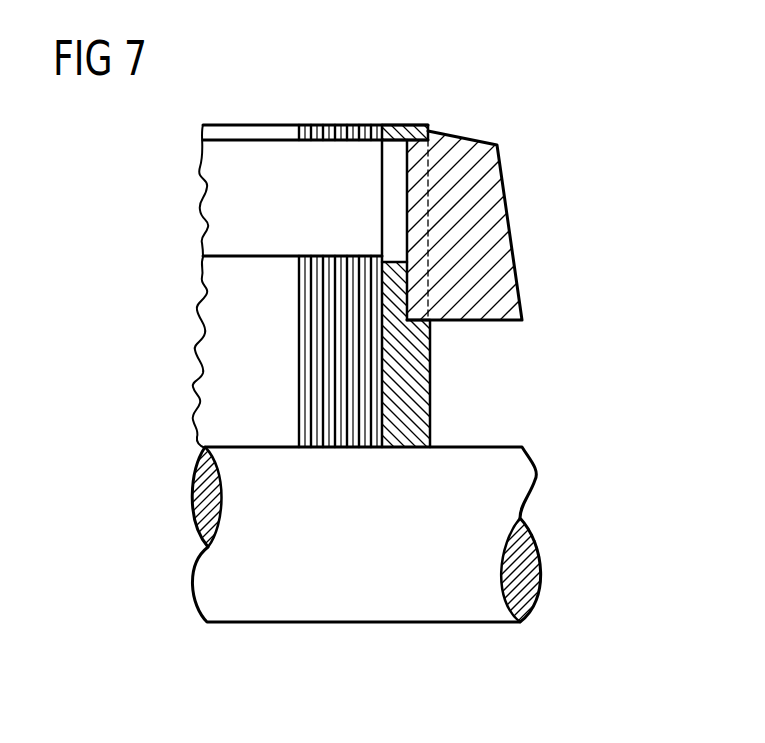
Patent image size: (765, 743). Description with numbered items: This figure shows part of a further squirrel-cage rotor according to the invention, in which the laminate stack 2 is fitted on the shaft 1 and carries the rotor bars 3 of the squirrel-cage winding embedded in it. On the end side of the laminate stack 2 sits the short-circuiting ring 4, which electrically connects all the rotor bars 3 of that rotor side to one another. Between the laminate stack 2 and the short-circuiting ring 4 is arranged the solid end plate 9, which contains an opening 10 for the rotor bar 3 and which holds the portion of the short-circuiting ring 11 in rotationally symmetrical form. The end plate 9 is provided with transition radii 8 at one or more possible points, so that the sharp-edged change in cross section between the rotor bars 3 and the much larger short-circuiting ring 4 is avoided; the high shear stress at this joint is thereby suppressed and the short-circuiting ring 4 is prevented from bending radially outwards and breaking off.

The shaft 1 is at (522, 478).
The rotor laminate stack 2 is at (300, 398).
The rotor bar 3 is at (212, 209).
The short-circuiting ring 4 is at (497, 210).
The transition radius 8 is at (428, 125).
The end plate 9 is at (430, 435).
The opening 10 is at (383, 250).
The portion of the short-circuiting ring 11 is at (410, 175).